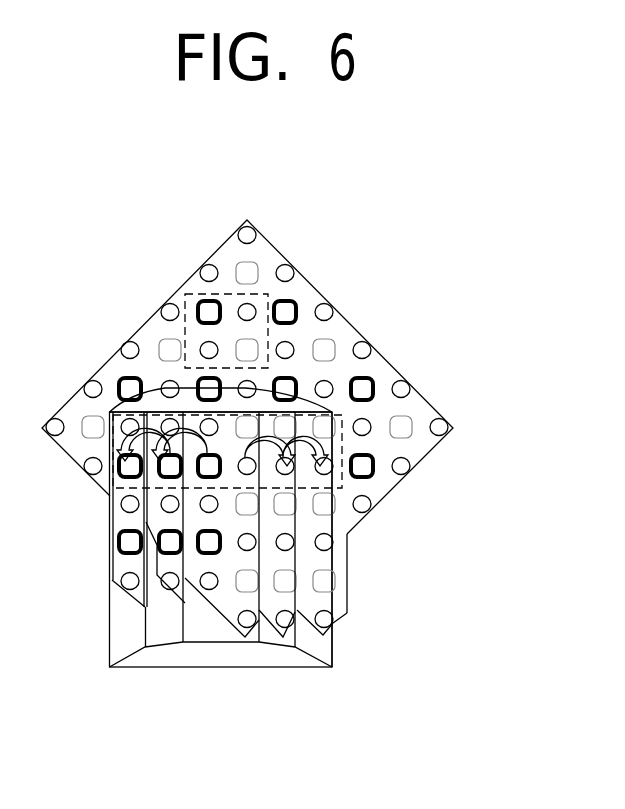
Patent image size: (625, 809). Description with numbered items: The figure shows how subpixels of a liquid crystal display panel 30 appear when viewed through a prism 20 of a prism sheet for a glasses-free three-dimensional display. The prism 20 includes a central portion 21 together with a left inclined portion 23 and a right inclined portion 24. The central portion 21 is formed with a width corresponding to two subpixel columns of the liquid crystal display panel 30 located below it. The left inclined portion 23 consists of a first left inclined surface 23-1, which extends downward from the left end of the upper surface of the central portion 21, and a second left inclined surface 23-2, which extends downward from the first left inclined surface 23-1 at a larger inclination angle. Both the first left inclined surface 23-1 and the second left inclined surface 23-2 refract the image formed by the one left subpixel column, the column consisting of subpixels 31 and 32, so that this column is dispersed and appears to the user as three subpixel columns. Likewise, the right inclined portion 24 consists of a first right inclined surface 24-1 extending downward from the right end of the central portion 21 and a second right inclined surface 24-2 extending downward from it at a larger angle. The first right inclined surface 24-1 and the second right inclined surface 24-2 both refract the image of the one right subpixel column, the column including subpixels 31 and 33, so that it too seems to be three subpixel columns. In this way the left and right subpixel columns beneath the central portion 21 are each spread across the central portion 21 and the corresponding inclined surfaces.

The prism 20 is at (256, 568).
The central portion 21 is at (217, 630).
The left inclined portion 23 is at (144, 580).
The first left inclined surface 23-1 is at (170, 642).
The second left inclined surface 23-2 is at (117, 645).
The right inclined portion 24 is at (299, 580).
The first right inclined surface 24-1 is at (277, 636).
The second right inclined surface 24-2 is at (317, 640).
The liquid crystal display panel 30 is at (460, 406).
The subpixel 31 is at (128, 578).
The subpixel 32 is at (127, 542).
The subpixel 33 is at (323, 580).